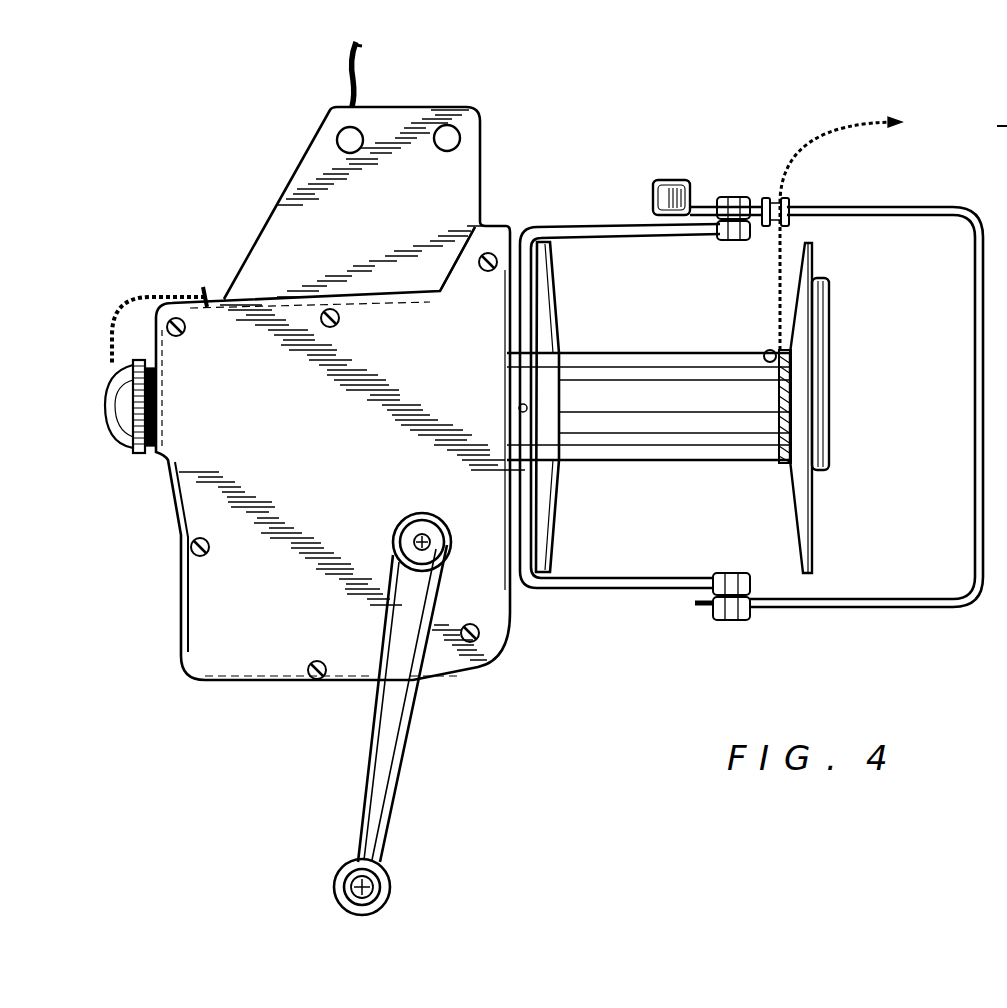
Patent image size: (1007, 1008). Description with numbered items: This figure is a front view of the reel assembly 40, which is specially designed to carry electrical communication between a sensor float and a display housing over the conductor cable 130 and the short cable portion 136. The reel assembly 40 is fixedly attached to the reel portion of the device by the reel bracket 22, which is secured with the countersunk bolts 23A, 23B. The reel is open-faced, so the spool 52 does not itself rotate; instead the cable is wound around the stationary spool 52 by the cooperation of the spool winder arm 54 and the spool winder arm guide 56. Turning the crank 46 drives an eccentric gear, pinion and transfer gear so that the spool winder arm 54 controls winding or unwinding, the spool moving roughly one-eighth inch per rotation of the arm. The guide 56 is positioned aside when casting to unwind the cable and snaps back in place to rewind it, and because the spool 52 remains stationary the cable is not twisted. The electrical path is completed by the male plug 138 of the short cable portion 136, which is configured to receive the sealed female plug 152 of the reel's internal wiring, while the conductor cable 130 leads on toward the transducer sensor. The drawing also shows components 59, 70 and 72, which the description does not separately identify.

The reel bracket 22 is at (272, 207).
The countersunk bolt 23A is at (347, 130).
The countersunk bolt 23B is at (452, 137).
The short cable portion 136 is at (349, 69).
The sealed female plug 152 is at (130, 392).
The male plug 138 is at (133, 452).
The crank 46 is at (365, 782).
The reel assembly 40 is at (577, 217).
The spool winder arm 54 is at (617, 235).
The spool winder arm guide 56 is at (887, 607).
The switch 59 is at (672, 180).
The conductor cable 130 is at (785, 240).
The spool 52 is at (692, 465).
The spool flange hub 70 is at (826, 313).
The line attachment ring 72 is at (768, 350).